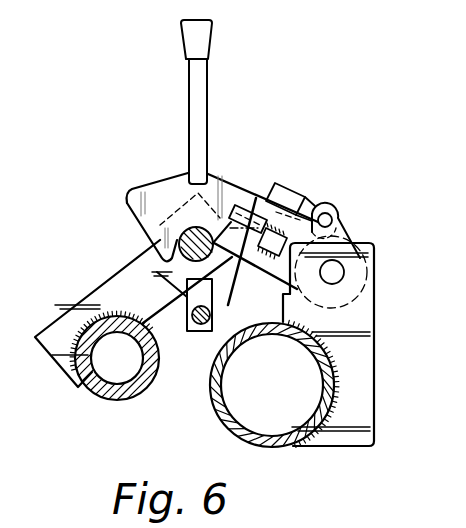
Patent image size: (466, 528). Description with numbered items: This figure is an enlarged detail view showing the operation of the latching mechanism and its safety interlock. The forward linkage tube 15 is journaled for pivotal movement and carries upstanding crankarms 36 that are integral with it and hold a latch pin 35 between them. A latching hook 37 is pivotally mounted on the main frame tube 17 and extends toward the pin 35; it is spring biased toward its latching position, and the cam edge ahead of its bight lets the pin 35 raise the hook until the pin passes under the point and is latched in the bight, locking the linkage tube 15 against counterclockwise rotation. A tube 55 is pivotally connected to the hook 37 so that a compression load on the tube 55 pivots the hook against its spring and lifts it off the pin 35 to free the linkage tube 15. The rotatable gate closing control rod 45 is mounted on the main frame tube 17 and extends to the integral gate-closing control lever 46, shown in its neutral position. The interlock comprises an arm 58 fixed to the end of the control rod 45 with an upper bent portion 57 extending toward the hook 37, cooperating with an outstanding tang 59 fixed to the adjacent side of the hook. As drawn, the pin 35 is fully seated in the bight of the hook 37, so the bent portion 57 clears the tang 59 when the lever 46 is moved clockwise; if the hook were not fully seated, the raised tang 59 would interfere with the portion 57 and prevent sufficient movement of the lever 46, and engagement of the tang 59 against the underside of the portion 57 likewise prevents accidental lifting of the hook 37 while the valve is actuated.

The gate-closing control lever 46 is at (187, 90).
The latching hook 37 is at (143, 195).
The latch pin 35 is at (172, 236).
The crankarms 36 is at (93, 296).
The forward linkage tube 15 is at (111, 398).
The gate closing control rod 45 is at (192, 336).
The main frame tube 17 is at (220, 426).
The upper bent portion 57 is at (244, 193).
The tube 55 is at (297, 192).
The tang 59 is at (238, 263).
The arm 58 is at (222, 293).